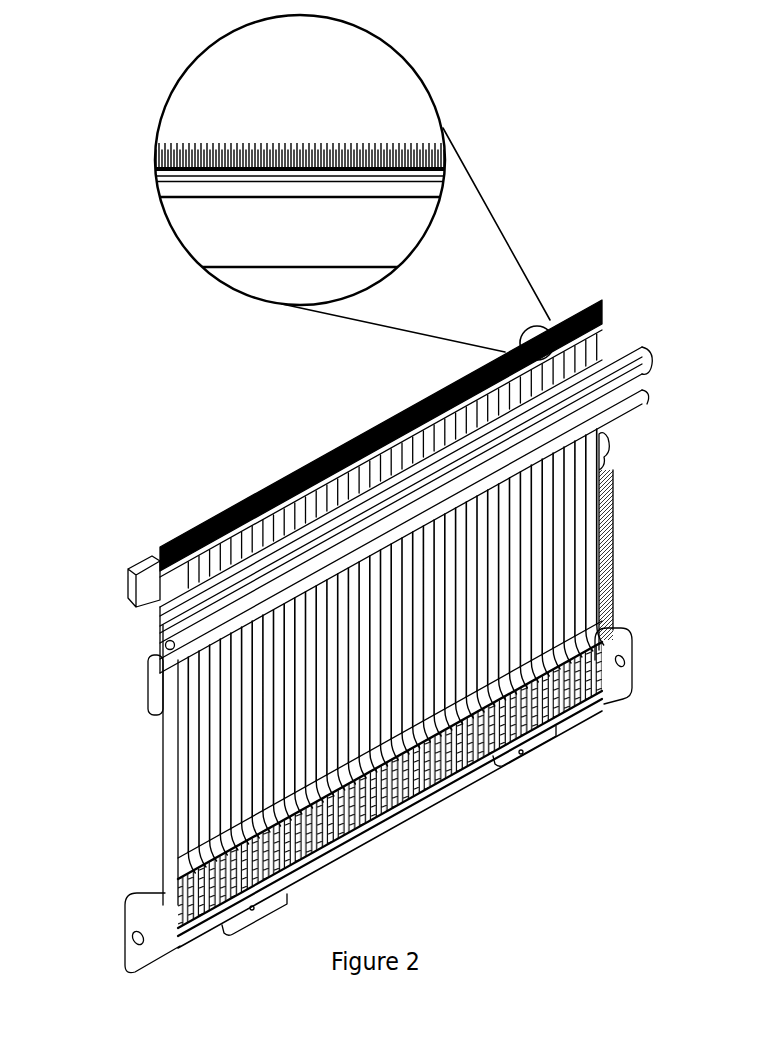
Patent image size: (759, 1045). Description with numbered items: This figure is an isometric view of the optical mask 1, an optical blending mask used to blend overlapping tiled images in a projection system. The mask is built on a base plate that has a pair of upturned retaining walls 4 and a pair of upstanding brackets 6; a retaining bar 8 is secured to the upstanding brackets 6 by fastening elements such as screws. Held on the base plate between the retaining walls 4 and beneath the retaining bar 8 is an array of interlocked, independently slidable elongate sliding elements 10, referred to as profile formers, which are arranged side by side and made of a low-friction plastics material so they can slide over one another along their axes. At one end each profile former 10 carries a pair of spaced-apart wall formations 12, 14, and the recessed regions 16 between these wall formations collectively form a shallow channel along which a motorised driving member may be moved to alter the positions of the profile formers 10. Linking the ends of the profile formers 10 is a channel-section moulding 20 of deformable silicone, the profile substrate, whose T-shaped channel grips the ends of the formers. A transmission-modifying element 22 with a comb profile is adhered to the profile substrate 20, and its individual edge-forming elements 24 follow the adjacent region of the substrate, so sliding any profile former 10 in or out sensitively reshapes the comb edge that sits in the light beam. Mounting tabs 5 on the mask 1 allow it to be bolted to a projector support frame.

The optical mask 1 is at (453, 825).
The upturned retaining walls 4 is at (603, 537).
The mounting tabs 5 is at (143, 927).
The upstanding brackets 6 is at (157, 616).
The retaining bar 8 is at (639, 362).
The elongate sliding elements (profile formers) 10 is at (553, 502).
The wall formation 12 is at (573, 653).
The wall formation 14 is at (572, 728).
The recessed regions 16 is at (580, 690).
The channel-section moulding (profile substrate) 20 is at (150, 558).
The transmission-modifying element (comb) 22 is at (265, 492).
The edge-forming elements 24 is at (220, 140).